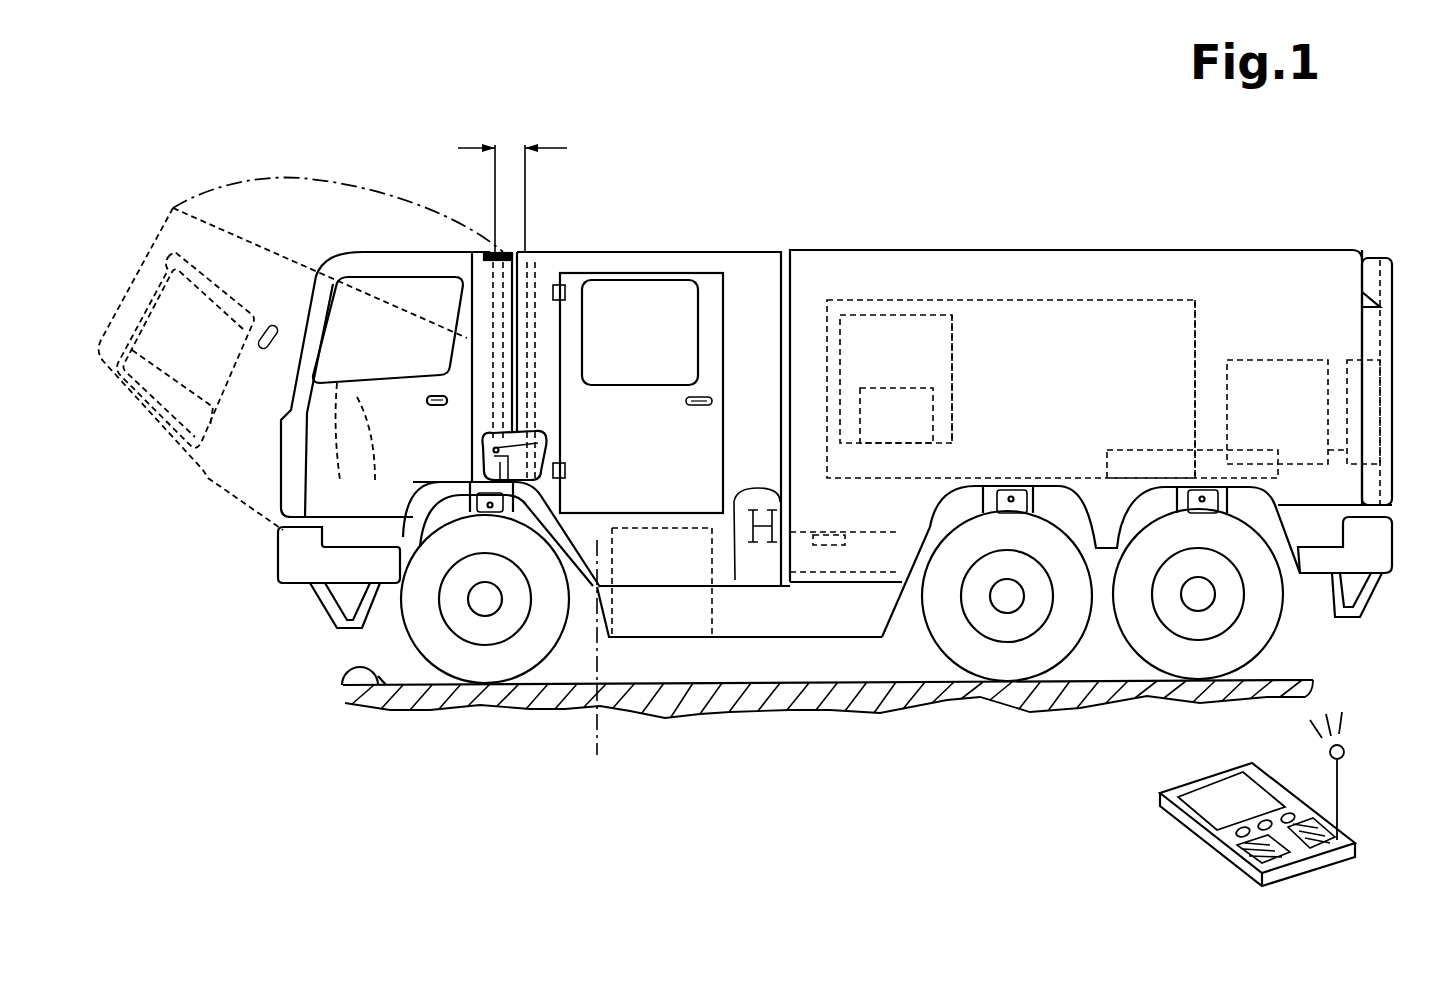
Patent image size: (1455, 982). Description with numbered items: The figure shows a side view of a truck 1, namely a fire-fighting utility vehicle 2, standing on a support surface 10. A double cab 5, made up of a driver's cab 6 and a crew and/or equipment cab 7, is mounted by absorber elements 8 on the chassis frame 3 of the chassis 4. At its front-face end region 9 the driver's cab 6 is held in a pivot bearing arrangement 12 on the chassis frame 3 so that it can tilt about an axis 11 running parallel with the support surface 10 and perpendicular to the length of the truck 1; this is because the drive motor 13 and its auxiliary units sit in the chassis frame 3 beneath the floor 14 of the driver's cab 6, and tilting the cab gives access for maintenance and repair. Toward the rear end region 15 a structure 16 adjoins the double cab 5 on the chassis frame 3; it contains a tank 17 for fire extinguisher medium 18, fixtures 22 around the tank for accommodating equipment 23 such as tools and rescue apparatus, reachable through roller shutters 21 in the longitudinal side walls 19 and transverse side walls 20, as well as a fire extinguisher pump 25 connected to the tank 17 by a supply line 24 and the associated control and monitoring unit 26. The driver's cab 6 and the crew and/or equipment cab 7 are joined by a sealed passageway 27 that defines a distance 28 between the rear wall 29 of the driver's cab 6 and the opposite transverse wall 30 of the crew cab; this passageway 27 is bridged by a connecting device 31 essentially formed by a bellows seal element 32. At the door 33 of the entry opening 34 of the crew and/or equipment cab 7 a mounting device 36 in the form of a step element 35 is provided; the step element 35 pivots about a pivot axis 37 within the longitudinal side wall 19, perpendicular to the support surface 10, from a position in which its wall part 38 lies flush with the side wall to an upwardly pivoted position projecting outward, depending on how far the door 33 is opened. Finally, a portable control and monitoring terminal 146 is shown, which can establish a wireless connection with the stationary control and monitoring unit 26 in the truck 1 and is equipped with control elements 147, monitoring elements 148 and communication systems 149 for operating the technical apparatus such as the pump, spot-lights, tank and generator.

The truck 1 is at (925, 159).
The fire-fighting utility vehicle 2 is at (839, 181).
The chassis frame 3 is at (402, 607).
The chassis 4 is at (1307, 645).
The double cab 5 is at (485, 215).
The driver's cab 6 is at (384, 232).
The crew and/or equipment cab 7 is at (645, 232).
The absorber elements 8 is at (1023, 490).
The front-face end region 9 is at (268, 577).
The support surface 10 is at (342, 686).
The axis 11 is at (352, 592).
The pivot bearing arrangement 12 is at (358, 532).
The drive motor 13 is at (343, 594).
The floor 14 is at (447, 505).
The rear end region 15 is at (1393, 538).
The structure 16 is at (1147, 268).
The tank 17 is at (1065, 333).
The fire extinguisher medium 18 is at (998, 330).
The longitudinal side walls 19 is at (1230, 291).
The transverse side walls 20 is at (1364, 306).
The roller shutters 21 is at (1387, 345).
The fixtures 22 is at (926, 334).
The equipment 23 is at (912, 415).
The supply line 24 is at (1126, 472).
The fire extinguisher pump 25 is at (1275, 388).
The control and monitoring unit 26 is at (1357, 438).
The passageway 27 is at (478, 335).
The distance 28 is at (508, 148).
The rear wall 29 is at (490, 297).
The transverse wall 30 is at (537, 262).
The connecting device 31 is at (564, 270).
The bellows seal element 32 is at (528, 262).
The door 33 is at (706, 318).
The entry opening 34 is at (713, 357).
The step element 35 is at (667, 603).
The mounting device 36 is at (705, 655).
The pivot axis 37 is at (596, 719).
The wall part 38 is at (633, 618).
The control and monitoring terminal 146 is at (1141, 779).
The control elements 147 is at (1238, 855).
The monitoring elements 148 is at (1229, 835).
The communication systems 149 is at (1193, 810).